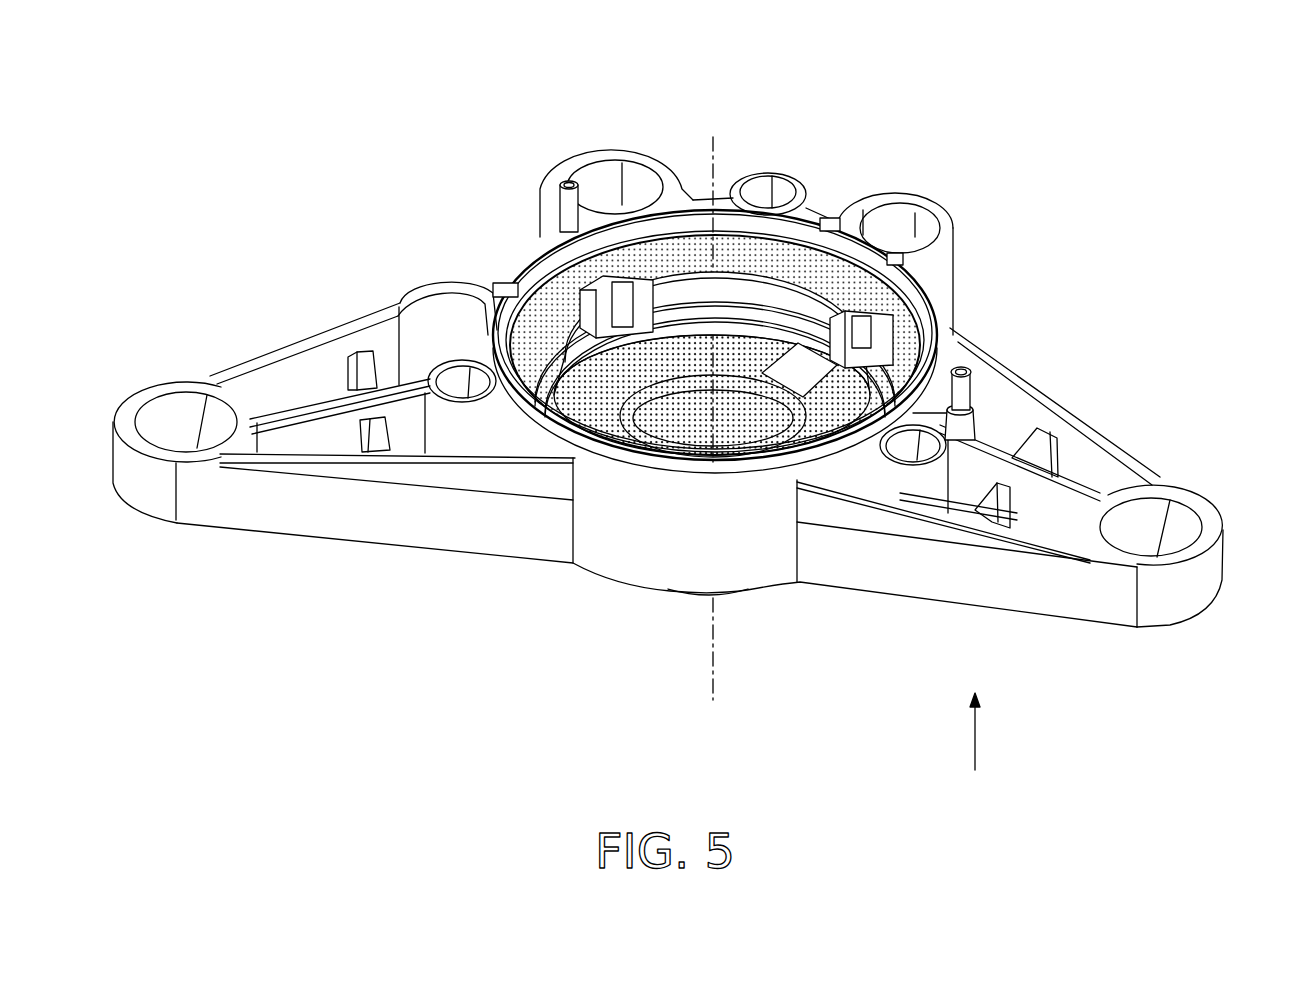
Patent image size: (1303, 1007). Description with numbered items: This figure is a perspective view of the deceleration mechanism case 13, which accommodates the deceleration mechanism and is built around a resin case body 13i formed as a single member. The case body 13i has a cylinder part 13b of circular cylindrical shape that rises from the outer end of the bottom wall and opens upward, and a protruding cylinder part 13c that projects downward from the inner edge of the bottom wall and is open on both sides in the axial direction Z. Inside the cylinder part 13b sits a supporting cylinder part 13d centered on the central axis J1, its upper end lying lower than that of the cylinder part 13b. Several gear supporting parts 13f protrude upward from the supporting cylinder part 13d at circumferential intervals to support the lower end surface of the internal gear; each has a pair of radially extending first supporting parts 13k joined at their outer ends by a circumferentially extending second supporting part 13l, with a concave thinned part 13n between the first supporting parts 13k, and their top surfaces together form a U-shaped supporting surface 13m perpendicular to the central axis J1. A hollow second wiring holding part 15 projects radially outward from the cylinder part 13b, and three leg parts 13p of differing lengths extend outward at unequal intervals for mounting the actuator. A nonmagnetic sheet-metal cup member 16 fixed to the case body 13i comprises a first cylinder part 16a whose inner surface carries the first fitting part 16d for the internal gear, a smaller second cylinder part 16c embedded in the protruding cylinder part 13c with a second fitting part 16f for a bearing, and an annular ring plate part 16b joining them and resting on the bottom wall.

The deceleration mechanism case 13 is at (623, 537).
The cylinder part 13b is at (647, 543).
The protruding cylinder part 13c is at (684, 591).
The supporting cylinder part 13d is at (790, 293).
The gear supporting part 13f is at (590, 283).
The case body 13i is at (773, 553).
The first supporting part 13k is at (597, 287).
The second supporting part 13l is at (607, 287).
The supporting surface 13m is at (617, 293).
The thinned part 13n is at (657, 300).
The leg part 13p is at (143, 493).
The second wiring holding part 15 is at (940, 212).
The cup member 16 is at (603, 417).
The first cylinder part 16a is at (735, 257).
The ring plate part 16b is at (830, 417).
The second cylinder part 16c is at (663, 433).
The first fitting part 16d is at (760, 258).
The second fitting part 16f is at (737, 437).
The central axis J1 is at (714, 137).
The axial direction Z is at (973, 715).